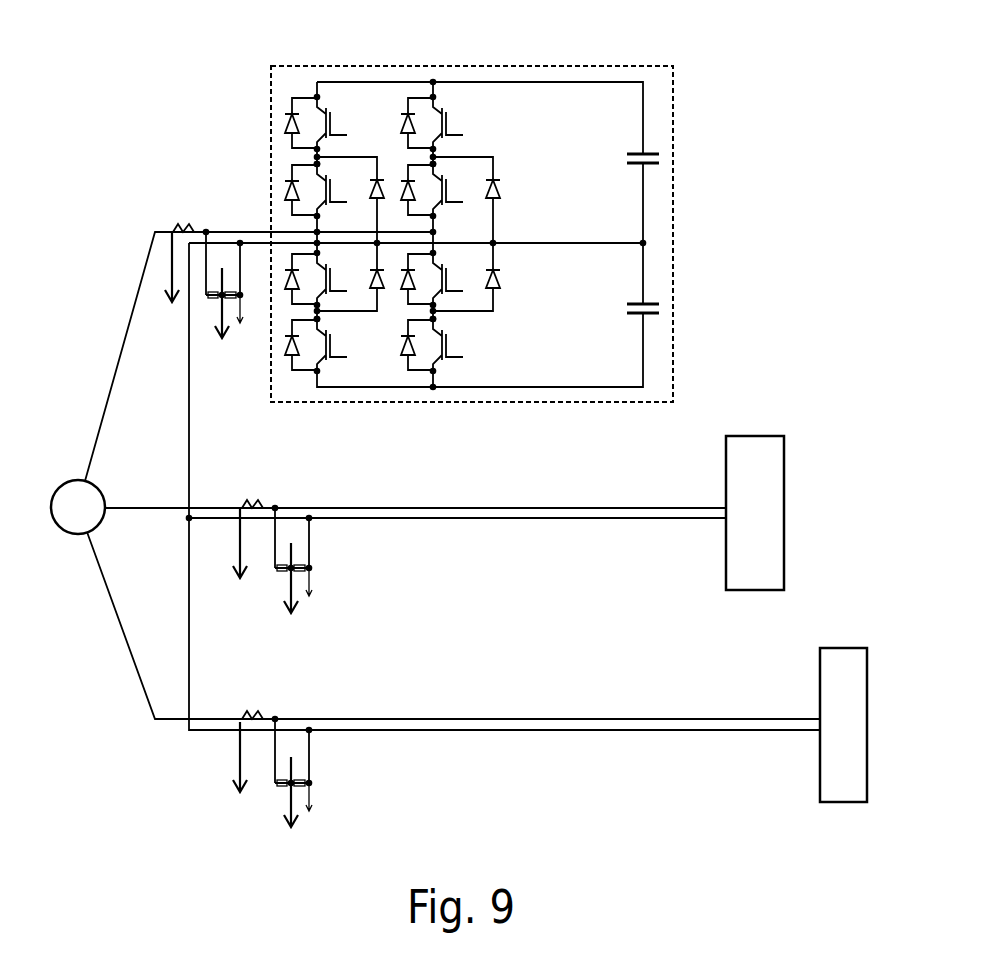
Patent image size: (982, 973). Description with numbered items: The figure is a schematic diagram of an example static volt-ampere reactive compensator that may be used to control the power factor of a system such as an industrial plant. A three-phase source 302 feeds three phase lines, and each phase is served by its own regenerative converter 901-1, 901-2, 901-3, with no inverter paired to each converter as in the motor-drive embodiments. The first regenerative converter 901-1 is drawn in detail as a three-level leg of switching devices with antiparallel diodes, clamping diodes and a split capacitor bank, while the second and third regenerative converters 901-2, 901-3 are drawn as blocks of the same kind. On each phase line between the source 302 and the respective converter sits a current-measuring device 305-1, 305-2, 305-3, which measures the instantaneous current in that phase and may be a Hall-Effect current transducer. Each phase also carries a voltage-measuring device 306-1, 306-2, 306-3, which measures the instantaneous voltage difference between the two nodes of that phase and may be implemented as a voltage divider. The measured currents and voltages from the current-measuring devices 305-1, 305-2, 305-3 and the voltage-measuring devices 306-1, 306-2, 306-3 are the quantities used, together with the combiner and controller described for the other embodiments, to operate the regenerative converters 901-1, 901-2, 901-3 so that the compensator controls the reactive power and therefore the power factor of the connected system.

The three-phase source 302 is at (72, 481).
The current-measuring device 305-1 is at (187, 225).
The current-measuring device 305-2 is at (257, 499).
The current-measuring device 305-3 is at (257, 713).
The voltage-measuring device 306-1 is at (233, 342).
The voltage-measuring device 306-2 is at (322, 568).
The voltage-measuring device 306-3 is at (322, 783).
The regenerative converter 901-1 is at (547, 66).
The regenerative converter 901-2 is at (754, 436).
The regenerative converter 901-3 is at (838, 648).